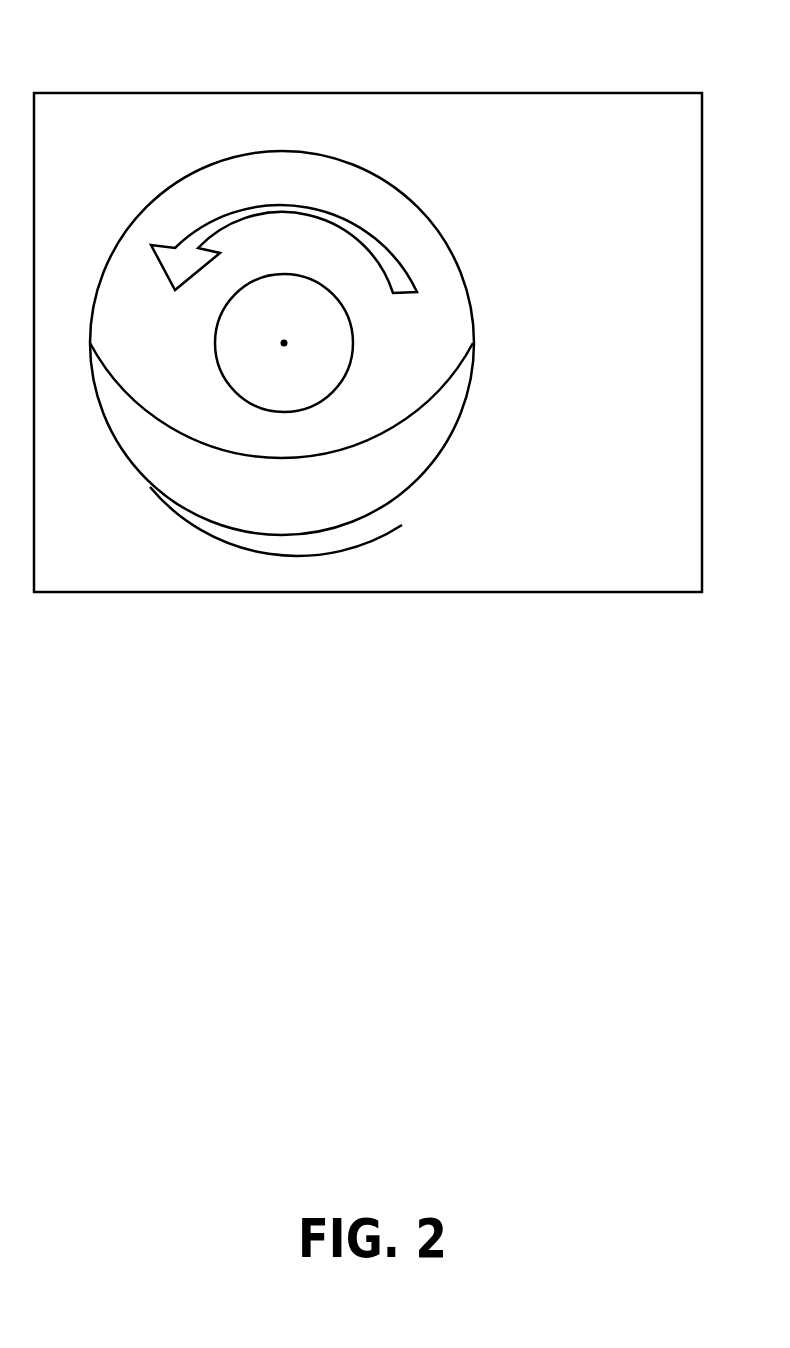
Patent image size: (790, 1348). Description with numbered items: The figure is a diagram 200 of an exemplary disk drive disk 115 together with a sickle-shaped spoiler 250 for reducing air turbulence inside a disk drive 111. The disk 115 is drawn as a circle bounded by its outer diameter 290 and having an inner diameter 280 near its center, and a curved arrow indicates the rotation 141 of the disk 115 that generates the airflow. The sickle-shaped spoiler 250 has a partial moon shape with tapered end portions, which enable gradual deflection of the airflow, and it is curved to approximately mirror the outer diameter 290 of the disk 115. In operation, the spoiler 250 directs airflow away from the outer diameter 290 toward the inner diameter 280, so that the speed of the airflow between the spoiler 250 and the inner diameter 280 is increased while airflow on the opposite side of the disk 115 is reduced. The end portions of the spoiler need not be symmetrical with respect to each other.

The diagram 200 is at (94, 36).
The disk drive 111 is at (317, 592).
The disk drive disk 115 is at (455, 255).
The rotation 141 is at (365, 230).
The sickle-shaped spoiler 250 is at (438, 420).
The inner diameter 280 is at (284, 274).
The outer diameter 290 is at (402, 493).